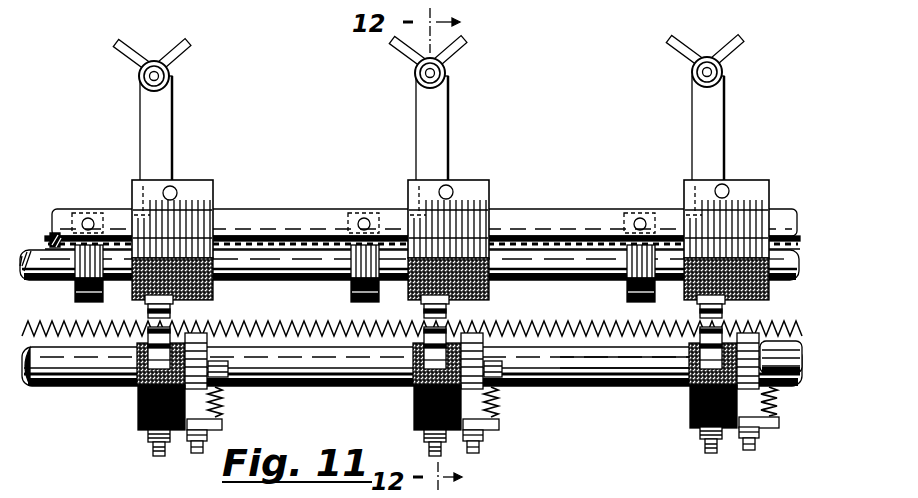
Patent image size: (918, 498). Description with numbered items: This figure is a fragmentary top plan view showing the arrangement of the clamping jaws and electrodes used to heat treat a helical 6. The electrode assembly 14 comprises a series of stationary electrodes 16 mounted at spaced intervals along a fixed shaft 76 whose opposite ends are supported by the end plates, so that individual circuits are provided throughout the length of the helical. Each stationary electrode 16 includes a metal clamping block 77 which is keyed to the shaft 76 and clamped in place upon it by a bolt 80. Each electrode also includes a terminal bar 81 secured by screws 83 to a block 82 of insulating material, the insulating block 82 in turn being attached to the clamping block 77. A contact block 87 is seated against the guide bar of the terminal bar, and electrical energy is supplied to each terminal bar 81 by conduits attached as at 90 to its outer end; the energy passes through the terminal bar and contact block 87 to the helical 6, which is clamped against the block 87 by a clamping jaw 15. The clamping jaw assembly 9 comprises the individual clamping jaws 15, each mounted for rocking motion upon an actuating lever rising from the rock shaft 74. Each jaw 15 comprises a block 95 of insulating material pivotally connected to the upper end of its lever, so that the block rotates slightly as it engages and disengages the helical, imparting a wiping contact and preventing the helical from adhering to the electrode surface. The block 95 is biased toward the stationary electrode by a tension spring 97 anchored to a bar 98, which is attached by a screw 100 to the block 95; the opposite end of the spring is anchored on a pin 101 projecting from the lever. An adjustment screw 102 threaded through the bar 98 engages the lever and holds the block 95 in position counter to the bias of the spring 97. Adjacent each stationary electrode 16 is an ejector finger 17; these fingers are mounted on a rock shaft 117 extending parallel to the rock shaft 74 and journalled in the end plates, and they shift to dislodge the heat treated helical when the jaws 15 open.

The helical 6 is at (268, 323).
The clamping jaw assembly 9 is at (139, 420).
The electrode assembly 14 is at (200, 179).
The clamping jaw 15 is at (140, 356).
The stationary electrode 16 is at (143, 139).
The ejector finger 17 is at (68, 298).
The rock shaft 74 is at (640, 385).
The fixed shaft 76 is at (558, 215).
The clamping block 77 is at (137, 193).
The bolt 80 is at (449, 188).
The terminal bar 81 is at (437, 103).
The insulating block 82 is at (489, 287).
The screws 83 is at (218, 293).
The contact block 87 is at (172, 324).
The conduit attachment 90 is at (139, 84).
The block 95 is at (138, 400).
The tension spring 97 is at (222, 402).
The bar 98 is at (223, 427).
The screw 100 is at (162, 455).
The pin 101 is at (220, 367).
The adjustment screw 102 is at (204, 453).
The rock shaft 117 is at (273, 245).